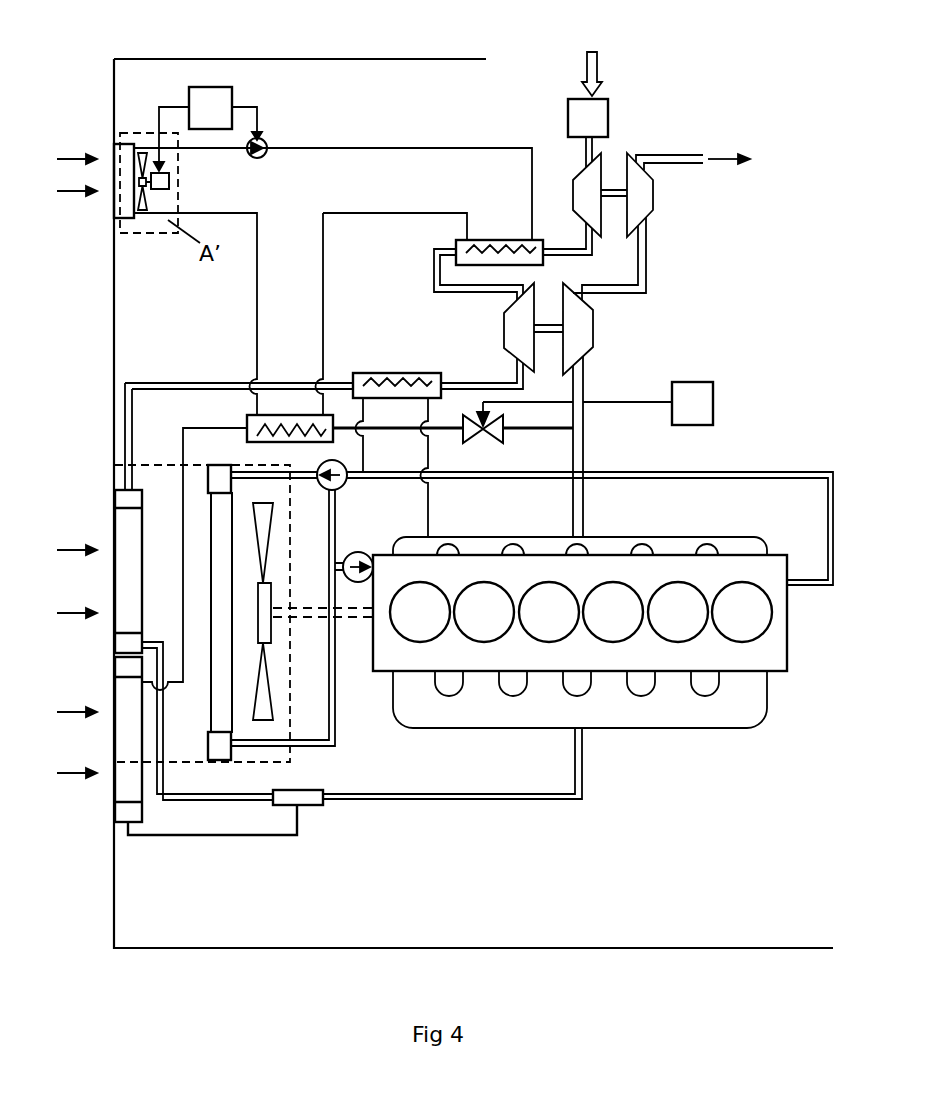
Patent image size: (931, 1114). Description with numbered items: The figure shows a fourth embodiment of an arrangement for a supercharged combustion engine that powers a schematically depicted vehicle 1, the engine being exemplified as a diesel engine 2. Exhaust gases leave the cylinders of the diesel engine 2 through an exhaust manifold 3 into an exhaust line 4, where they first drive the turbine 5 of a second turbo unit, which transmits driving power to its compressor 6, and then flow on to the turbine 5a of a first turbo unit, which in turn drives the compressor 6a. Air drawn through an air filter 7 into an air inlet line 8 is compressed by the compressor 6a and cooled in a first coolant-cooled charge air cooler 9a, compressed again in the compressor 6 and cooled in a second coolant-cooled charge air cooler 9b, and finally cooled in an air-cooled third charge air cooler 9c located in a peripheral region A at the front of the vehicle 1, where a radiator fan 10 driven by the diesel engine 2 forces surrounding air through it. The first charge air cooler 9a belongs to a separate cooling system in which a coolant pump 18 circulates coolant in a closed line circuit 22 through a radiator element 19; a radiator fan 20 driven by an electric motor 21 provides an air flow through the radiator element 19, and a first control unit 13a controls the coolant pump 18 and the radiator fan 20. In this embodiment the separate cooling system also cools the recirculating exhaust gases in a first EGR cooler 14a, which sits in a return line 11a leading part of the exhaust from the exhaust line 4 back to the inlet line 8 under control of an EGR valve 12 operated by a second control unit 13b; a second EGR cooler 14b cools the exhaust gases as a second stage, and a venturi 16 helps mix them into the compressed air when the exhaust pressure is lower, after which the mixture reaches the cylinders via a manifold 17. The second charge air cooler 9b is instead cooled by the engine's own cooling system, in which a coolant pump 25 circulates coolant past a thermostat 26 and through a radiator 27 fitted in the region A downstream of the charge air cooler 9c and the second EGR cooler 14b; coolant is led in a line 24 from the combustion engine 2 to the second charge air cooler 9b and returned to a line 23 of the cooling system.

The vehicle 1 is at (150, 110).
The diesel engine 2 is at (768, 650).
The exhaust manifold 3 is at (608, 548).
The exhaust line 4 is at (577, 438).
The turbine (high pressure) 5 is at (577, 320).
The turbine 5a is at (643, 195).
The compressor (high pressure) 6 is at (518, 328).
The compressor 6a is at (590, 188).
The air filter 7 is at (592, 107).
The air inlet line 8 is at (240, 385).
The first charge air cooler 9a is at (462, 257).
The second charge air cooler 9b is at (389, 380).
The third charge air cooler 9c is at (132, 562).
The radiator fan 10 is at (263, 623).
The coolant line 11a is at (180, 493).
The EGR valve 12 is at (497, 433).
The first control unit 13a is at (213, 97).
The second control unit 13b is at (703, 398).
The first EGR cooler 14a is at (257, 423).
The second EGR cooler 14b is at (132, 765).
The venturi 16 is at (302, 797).
The manifold 17 is at (577, 707).
The coolant pump 18 is at (263, 152).
The radiator element 19 is at (125, 193).
The radiator fan 20 is at (140, 155).
The electric motor 21 is at (162, 190).
The closed line circuit 22 is at (353, 148).
The line 23 is at (717, 473).
The line 24 is at (432, 513).
The coolant pump 25 is at (363, 550).
The thermostat 26 is at (328, 487).
The radiator 27 is at (217, 513).
The peripheral region A is at (285, 737).